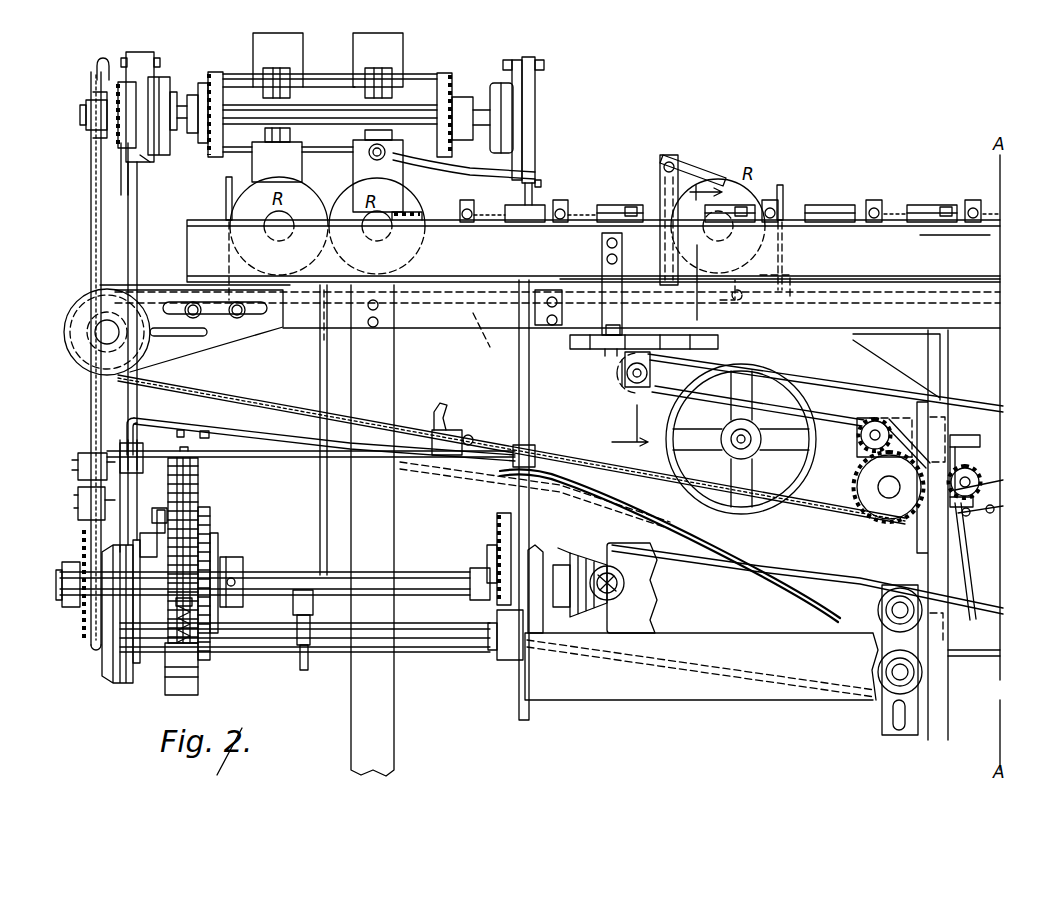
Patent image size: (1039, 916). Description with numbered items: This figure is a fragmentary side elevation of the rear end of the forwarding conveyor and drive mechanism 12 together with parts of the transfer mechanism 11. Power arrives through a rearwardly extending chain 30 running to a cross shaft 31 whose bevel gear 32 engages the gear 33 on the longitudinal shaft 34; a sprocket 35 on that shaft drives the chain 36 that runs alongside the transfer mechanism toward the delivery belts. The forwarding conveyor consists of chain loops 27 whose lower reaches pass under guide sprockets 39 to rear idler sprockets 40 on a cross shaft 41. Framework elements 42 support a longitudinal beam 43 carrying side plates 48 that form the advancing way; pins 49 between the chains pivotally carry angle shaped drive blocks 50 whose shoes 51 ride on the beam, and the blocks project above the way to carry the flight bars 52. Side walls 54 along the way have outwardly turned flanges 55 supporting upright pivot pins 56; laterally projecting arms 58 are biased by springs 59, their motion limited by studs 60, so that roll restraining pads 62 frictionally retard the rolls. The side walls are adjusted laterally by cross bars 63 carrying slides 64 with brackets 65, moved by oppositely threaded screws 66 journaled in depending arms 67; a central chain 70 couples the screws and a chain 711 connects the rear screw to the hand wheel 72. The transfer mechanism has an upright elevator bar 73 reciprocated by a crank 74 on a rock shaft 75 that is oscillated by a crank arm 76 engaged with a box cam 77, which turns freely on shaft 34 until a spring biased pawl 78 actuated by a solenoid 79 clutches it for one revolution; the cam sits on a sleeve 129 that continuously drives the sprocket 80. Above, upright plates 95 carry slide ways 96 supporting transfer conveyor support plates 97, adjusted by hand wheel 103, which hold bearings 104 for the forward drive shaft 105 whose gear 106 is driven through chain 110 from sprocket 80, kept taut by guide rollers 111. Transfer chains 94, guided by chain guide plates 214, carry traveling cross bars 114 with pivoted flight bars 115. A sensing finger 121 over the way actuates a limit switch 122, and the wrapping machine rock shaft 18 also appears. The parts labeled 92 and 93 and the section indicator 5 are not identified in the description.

The transfer mechanism 11 is at (573, 76).
The forwarding conveyor and drive mechanism 12 is at (841, 189).
The rock shaft 18 is at (241, 604).
The chain loops 27 is at (992, 308).
The rearwardly extending chain 30 is at (972, 715).
The cross shaft 31 is at (622, 583).
The bevel gear 32 is at (594, 555).
The gear 33 is at (582, 608).
The shaft 34 is at (427, 574).
The sprocket 35 is at (490, 534).
The chain 36 is at (506, 518).
The guide sprockets 39 is at (888, 507).
The rear idler sprockets 40 is at (135, 356).
The cross shaft 41 is at (95, 338).
The supporting framework elements 42 is at (396, 364).
The conveyor support bar or beam member 43 is at (484, 338).
The side plates 48 is at (858, 275).
The pins 49 is at (400, 451).
The drive blocks 50 is at (472, 432).
The shoes 51 is at (436, 412).
The flight bars 52 is at (227, 195).
The side walls 54 is at (990, 250).
The outwardly turned flanges 55 is at (930, 230).
The upright pivot pins 56 is at (464, 223).
The laterally projecting arms 58 is at (560, 223).
The springs 59 is at (920, 205).
The pins or studs 60 is at (632, 207).
The roll restraining pads 62 is at (606, 205).
The cross bars 63 is at (582, 348).
The slides 64 is at (610, 350).
The brackets 65 is at (603, 313).
The oppositely threaded screws 66 is at (624, 391).
The arms 67 is at (616, 377).
The central chain 70 is at (866, 352).
The hand wheel 72 is at (756, 512).
The elevator rod or bar 73 is at (319, 536).
The crank 74 is at (293, 613).
The rock shaft 75 is at (253, 652).
The crank arm 76 is at (170, 548).
The box cam 77 is at (203, 497).
The engaging pawl 78 is at (170, 538).
The solenoid 79 is at (140, 530).
The sprocket 80 is at (90, 650).
The spring 92 is at (184, 614).
The pipe 93 is at (200, 467).
The chains 94 is at (216, 72).
The upright plates 95 is at (137, 218).
The slide ways 96 is at (145, 155).
The transfer conveyor support plates 97 is at (146, 82).
The hand wheel 103 is at (102, 64).
The bearings 104 is at (100, 102).
The forward drive shaft 105 is at (321, 77).
The gear 106 is at (118, 112).
The chain 110 is at (92, 162).
The guide rollers 111 is at (90, 508).
The traveling cross bars 114 is at (405, 76).
The flight bars 115 is at (403, 42).
The sensing finger 121 is at (690, 166).
The limit switch 122 is at (660, 190).
The sleeve 129 is at (143, 684).
The chain guide plates 214 is at (122, 172).
The section arrow 5 is at (670, 323).
The chain 711 is at (632, 398).